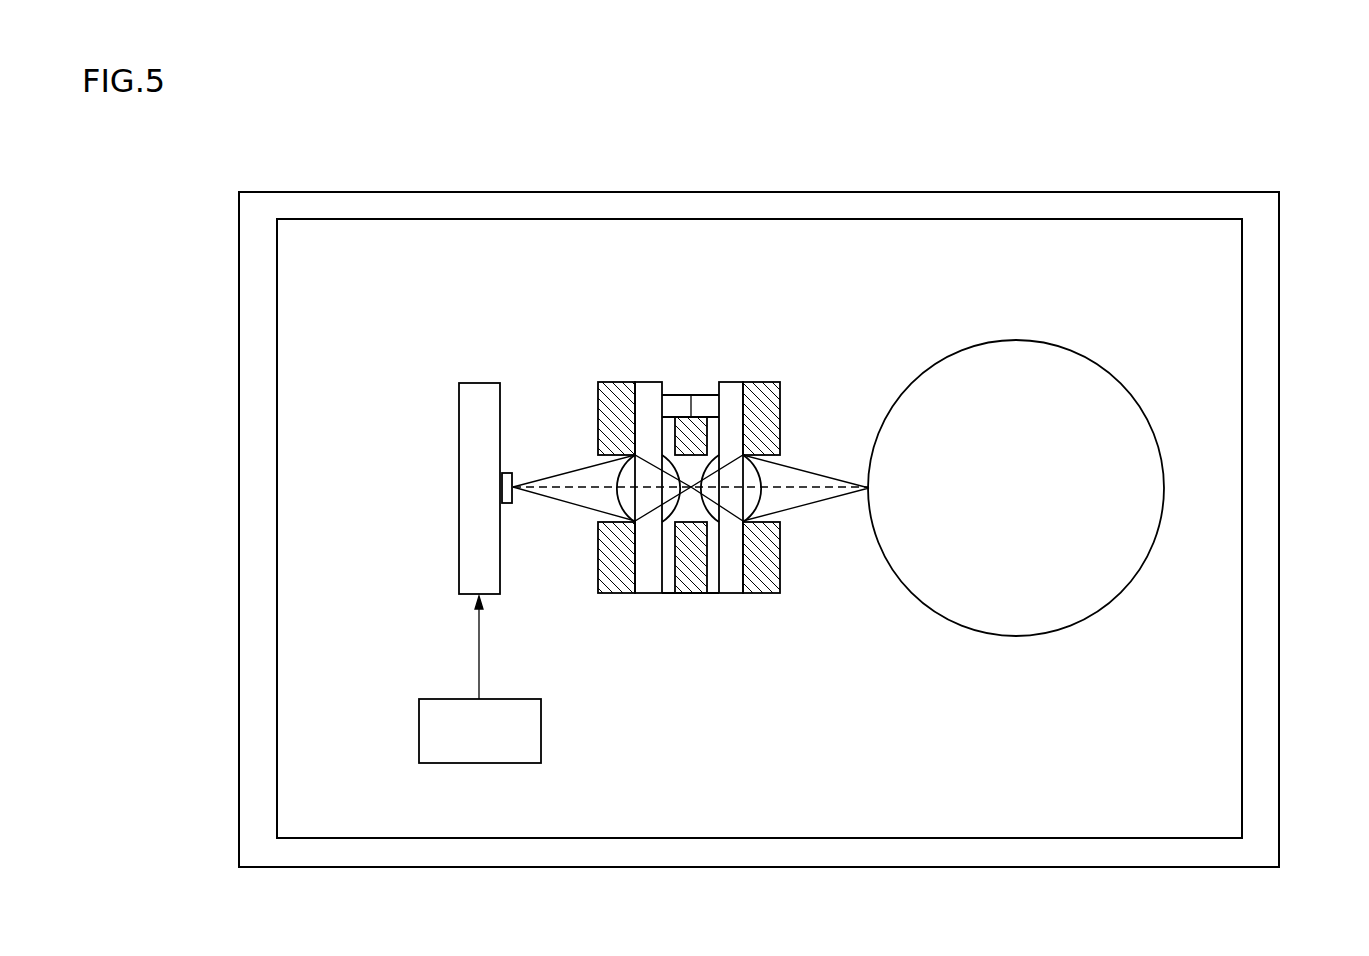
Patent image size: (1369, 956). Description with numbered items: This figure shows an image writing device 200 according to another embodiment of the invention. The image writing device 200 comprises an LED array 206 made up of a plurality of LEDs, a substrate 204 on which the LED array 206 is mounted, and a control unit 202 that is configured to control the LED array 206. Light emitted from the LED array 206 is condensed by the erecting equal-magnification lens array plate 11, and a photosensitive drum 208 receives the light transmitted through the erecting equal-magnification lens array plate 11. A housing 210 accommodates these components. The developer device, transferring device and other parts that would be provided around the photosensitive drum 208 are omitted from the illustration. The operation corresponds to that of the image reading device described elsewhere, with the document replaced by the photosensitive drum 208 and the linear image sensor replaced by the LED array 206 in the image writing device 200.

The erecting equal-magnification lens array plate 11 is at (644, 366).
The image writing device 200 is at (1071, 162).
The control unit 202 is at (541, 733).
The substrate 204 is at (459, 547).
The LED array 206 is at (508, 472).
The photosensitive drum 208 is at (1073, 350).
The housing 210 is at (1280, 482).